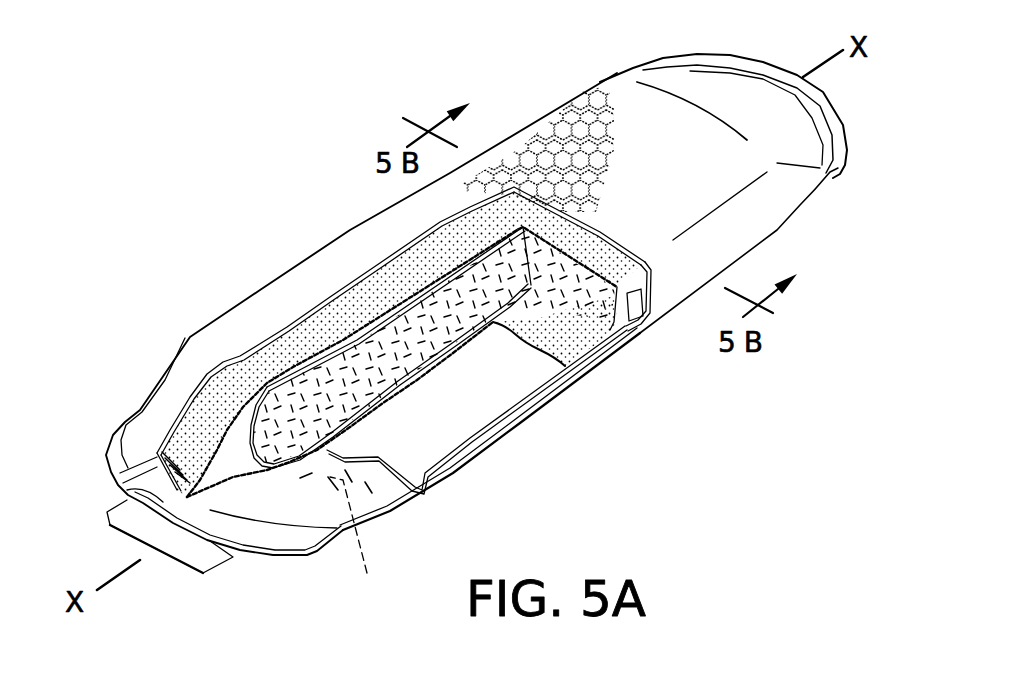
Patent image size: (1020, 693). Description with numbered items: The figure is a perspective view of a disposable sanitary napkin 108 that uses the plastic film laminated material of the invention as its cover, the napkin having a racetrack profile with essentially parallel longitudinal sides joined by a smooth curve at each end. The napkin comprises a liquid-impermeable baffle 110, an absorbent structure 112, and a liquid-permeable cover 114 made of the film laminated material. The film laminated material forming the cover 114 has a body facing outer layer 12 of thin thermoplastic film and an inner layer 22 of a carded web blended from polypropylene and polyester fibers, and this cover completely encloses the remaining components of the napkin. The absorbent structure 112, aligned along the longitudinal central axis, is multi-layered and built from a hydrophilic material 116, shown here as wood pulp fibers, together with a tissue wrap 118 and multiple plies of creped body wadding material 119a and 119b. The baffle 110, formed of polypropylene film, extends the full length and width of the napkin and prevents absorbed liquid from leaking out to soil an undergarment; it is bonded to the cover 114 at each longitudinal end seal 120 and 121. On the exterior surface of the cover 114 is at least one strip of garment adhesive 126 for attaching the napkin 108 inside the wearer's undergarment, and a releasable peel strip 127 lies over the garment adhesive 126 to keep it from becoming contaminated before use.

The sanitary napkin 108 is at (210, 100).
The absorbent structure 112 is at (720, 474).
The longitudinal end seal 121 is at (744, 84).
The liquid-permeable cover 114 is at (560, 125).
The body facing outer layer 12 is at (442, 215).
The inner layer 22 is at (390, 262).
The tissue wrap 118 is at (297, 380).
The hydrophilic material 116 is at (455, 308).
The creped body wadding material 119a is at (317, 332).
The creped body wadding material 119b is at (592, 355).
The liquid-impermeable baffle 110 is at (484, 450).
The longitudinal end seal 120 is at (123, 493).
The releasable peel strip 127 is at (193, 558).
The strip of garment adhesive 126 is at (361, 542).